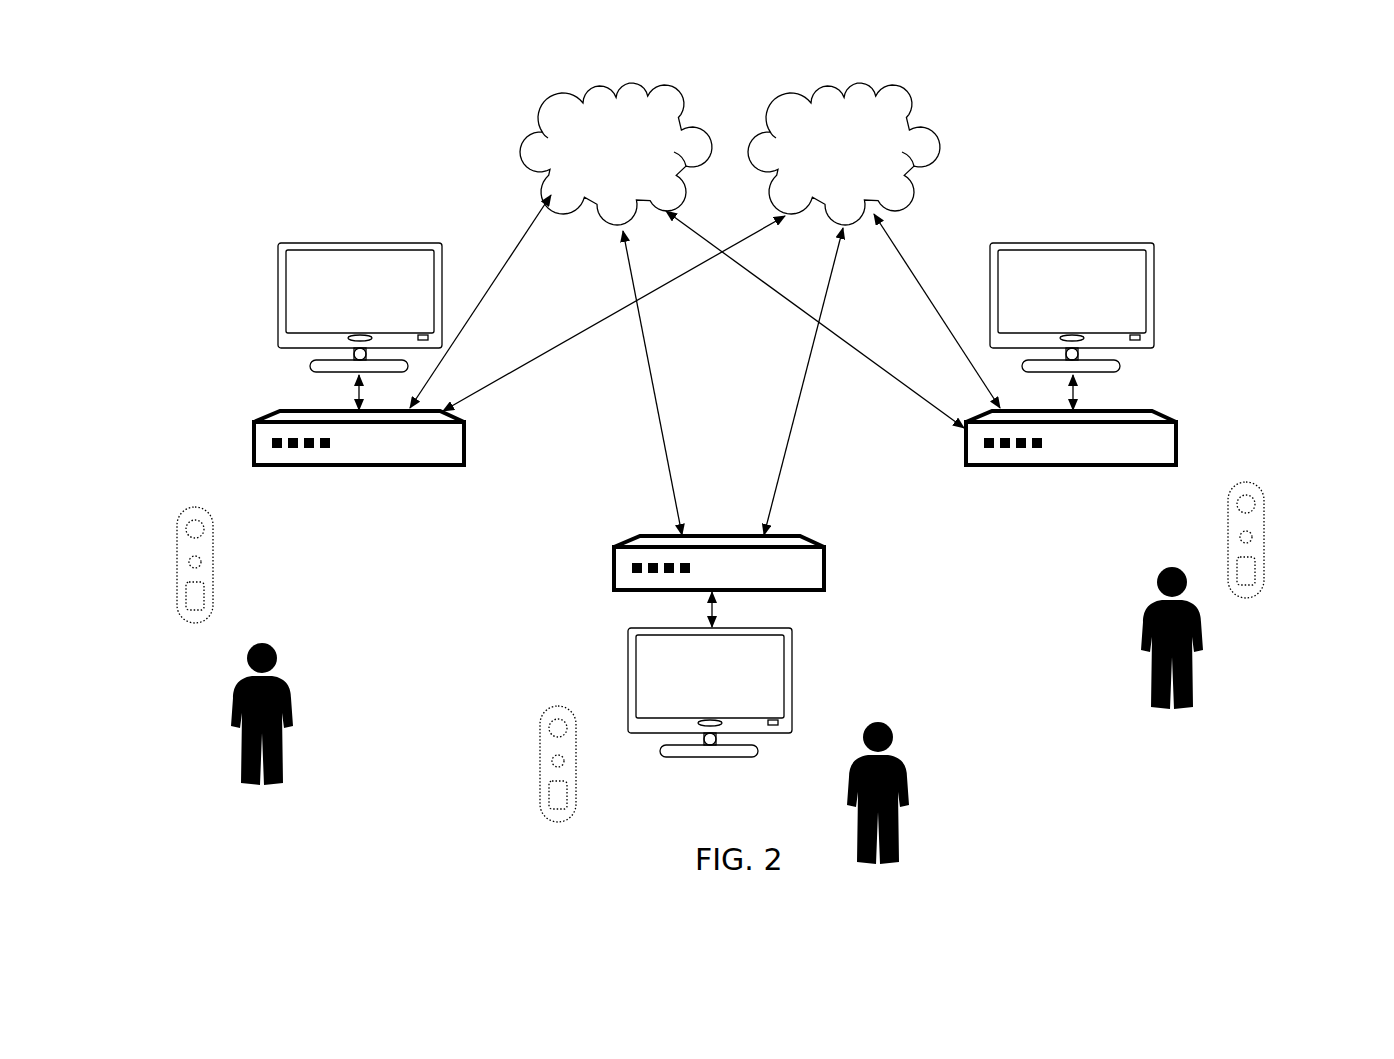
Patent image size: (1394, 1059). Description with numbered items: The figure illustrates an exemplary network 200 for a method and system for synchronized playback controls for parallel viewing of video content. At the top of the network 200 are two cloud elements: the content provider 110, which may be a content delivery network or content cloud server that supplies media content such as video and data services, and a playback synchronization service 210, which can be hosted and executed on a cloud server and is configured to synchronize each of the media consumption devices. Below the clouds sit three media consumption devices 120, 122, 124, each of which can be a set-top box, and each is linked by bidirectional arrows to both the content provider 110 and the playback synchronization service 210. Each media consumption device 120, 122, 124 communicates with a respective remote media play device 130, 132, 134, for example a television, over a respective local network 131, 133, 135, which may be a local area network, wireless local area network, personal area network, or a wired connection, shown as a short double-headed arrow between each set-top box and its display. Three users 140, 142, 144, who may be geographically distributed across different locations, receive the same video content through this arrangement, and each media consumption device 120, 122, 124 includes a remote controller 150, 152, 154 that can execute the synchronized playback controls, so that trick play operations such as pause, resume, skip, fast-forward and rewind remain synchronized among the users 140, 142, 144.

The network 200 is at (1172, 84).
The content provider 110 is at (650, 176).
The playback synchronization service 210 is at (862, 171).
The media consumption device 120 is at (347, 498).
The media consumption device 122 is at (1079, 498).
The media consumption device 124 is at (592, 563).
The remote media play device 130 is at (287, 228).
The remote media play device 132 is at (1178, 243).
The remote media play device 134 is at (828, 662).
The local network 131 is at (325, 388).
The local network 133 is at (1125, 386).
The local network 135 is at (745, 600).
The user 140 is at (217, 697).
The user 142 is at (1230, 682).
The user 144 is at (918, 765).
The remote controller 150 is at (166, 498).
The remote controller 152 is at (1283, 520).
The remote controller 154 is at (513, 740).